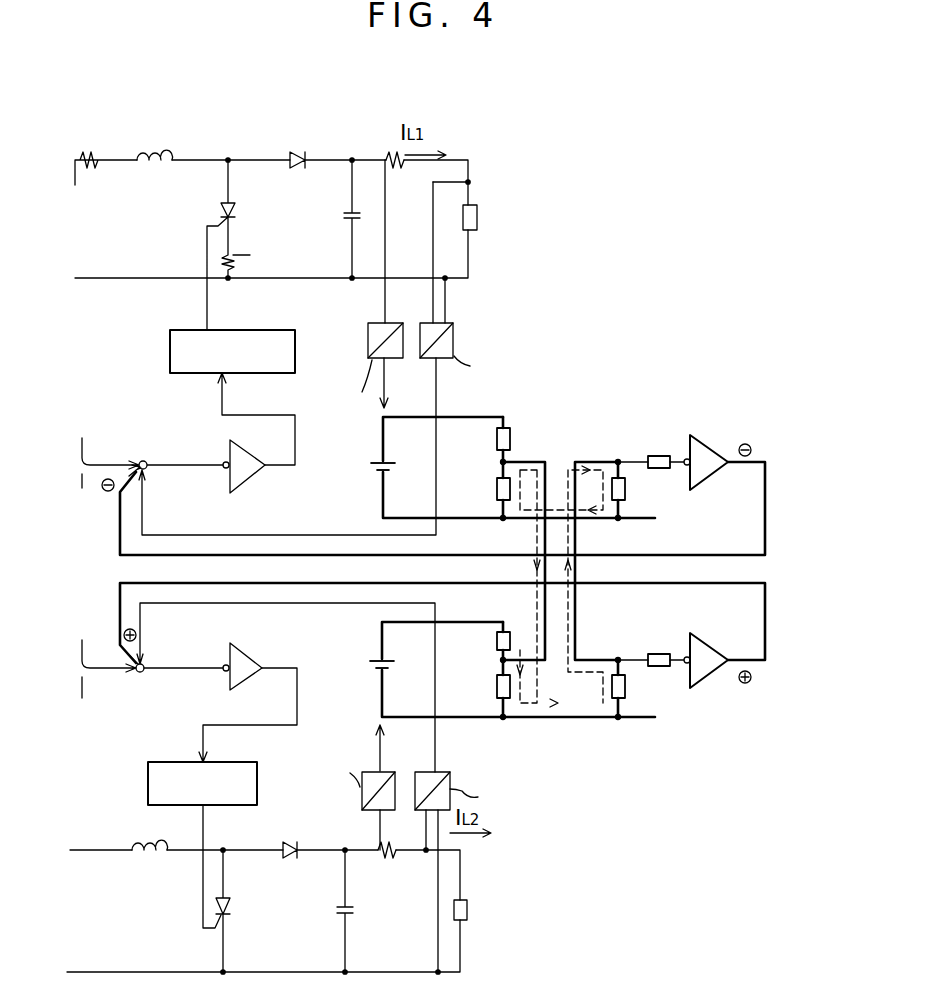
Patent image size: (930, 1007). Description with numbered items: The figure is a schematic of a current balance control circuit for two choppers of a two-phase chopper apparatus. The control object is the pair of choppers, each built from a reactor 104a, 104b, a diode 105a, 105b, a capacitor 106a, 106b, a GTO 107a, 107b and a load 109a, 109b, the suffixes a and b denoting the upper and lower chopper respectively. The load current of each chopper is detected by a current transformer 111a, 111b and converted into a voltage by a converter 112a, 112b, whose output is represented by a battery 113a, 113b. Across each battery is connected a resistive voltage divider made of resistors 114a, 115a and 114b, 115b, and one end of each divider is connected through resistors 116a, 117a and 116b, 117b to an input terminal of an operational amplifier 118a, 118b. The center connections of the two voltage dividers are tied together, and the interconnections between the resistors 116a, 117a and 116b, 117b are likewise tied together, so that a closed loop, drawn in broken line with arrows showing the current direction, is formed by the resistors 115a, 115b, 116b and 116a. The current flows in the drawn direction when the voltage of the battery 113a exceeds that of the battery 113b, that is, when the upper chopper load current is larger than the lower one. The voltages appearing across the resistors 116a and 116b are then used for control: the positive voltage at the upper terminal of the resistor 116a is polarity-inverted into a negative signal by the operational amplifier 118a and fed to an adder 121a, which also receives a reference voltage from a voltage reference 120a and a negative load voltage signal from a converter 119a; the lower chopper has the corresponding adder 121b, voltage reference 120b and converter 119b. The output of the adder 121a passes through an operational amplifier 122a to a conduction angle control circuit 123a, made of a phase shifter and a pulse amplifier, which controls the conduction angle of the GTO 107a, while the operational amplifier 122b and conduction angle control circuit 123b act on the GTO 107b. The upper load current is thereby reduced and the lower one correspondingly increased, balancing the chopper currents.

The reactor 104a is at (148, 158).
The diode 105a is at (298, 157).
The capacitor 106a is at (344, 213).
The GTO 107a is at (234, 222).
The load 109a is at (478, 216).
The current transformer 111a is at (385, 157).
The converter 112a is at (375, 326).
The battery 113a is at (372, 471).
The resistor 114a is at (512, 440).
The resistor 115a is at (496, 488).
The resistor 116a is at (626, 492).
The resistor 117a is at (656, 456).
The operational amplifier 118a is at (706, 446).
The converter 119a is at (452, 335).
The voltage reference 120a is at (74, 460).
The adder 121a is at (143, 460).
The operational amplifier 122a is at (252, 480).
The conduction angle control circuit 123a is at (170, 334).
The reactor 104b is at (140, 844).
The diode 105b is at (288, 844).
The capacitor 106b is at (352, 913).
The GTO 107b is at (232, 914).
The load 109b is at (472, 910).
The current transformer 111b is at (384, 854).
The converter 112b is at (365, 764).
The battery 113b is at (370, 668).
The resistor 114b is at (497, 642).
The resistor 115b is at (497, 688).
The resistor 116b is at (628, 688).
The resistor 117b is at (656, 654).
The operational amplifier 118b is at (706, 646).
The converter 119b is at (448, 772).
The voltage reference 120b is at (76, 674).
The adder 121b is at (145, 676).
The operational amplifier 122b is at (258, 640).
The conduction angle control circuit 123b is at (156, 762).